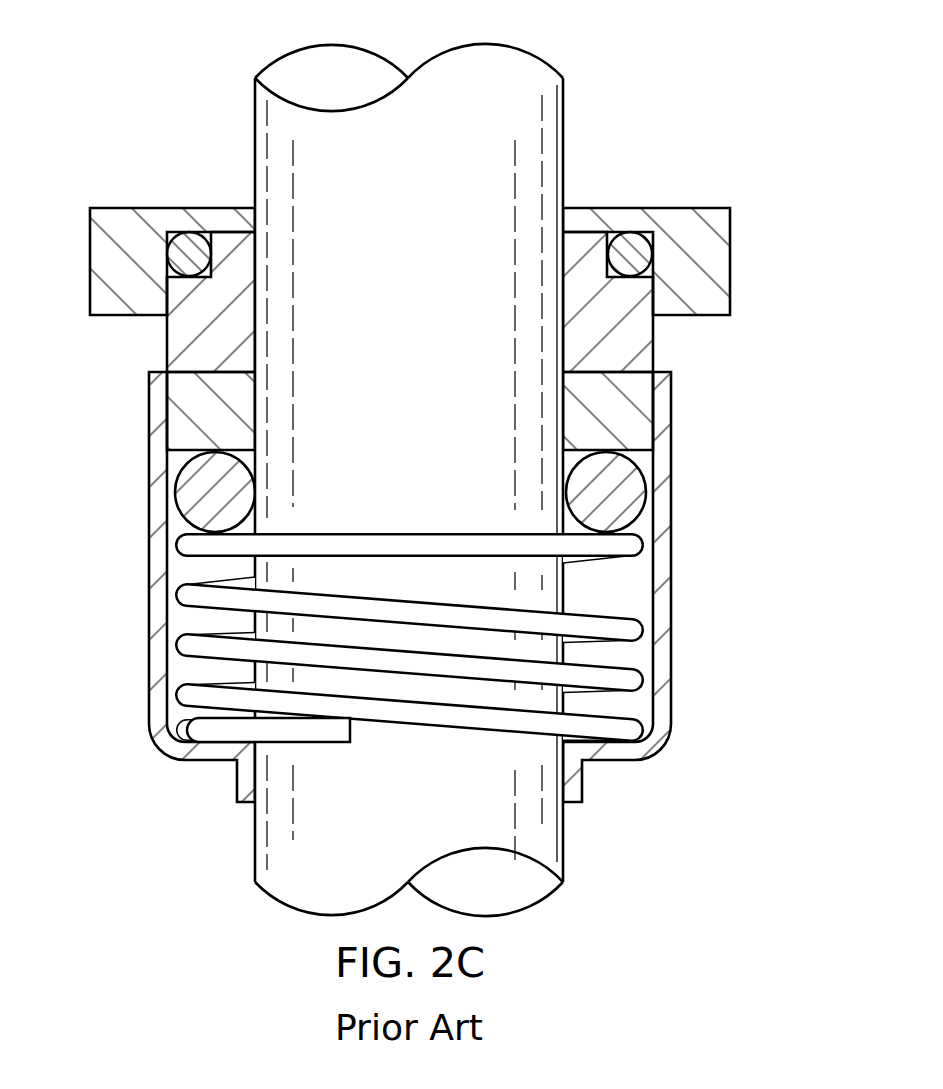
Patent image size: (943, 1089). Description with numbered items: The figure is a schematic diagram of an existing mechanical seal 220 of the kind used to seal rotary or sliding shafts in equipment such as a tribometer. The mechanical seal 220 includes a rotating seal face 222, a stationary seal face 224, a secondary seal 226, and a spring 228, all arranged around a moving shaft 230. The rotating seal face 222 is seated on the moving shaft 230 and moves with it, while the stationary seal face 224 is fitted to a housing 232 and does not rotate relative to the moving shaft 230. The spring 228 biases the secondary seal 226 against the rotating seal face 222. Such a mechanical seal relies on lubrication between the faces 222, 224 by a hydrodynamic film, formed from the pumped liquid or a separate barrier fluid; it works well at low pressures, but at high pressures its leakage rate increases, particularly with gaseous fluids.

The mechanical seal 220 is at (138, 87).
The rotating seal face 222 is at (178, 405).
The stationary seal face 224 is at (175, 350).
The secondary seal 226 is at (188, 498).
The spring 228 is at (410, 532).
The moving shaft 230 is at (255, 845).
The housing 232 is at (718, 258).